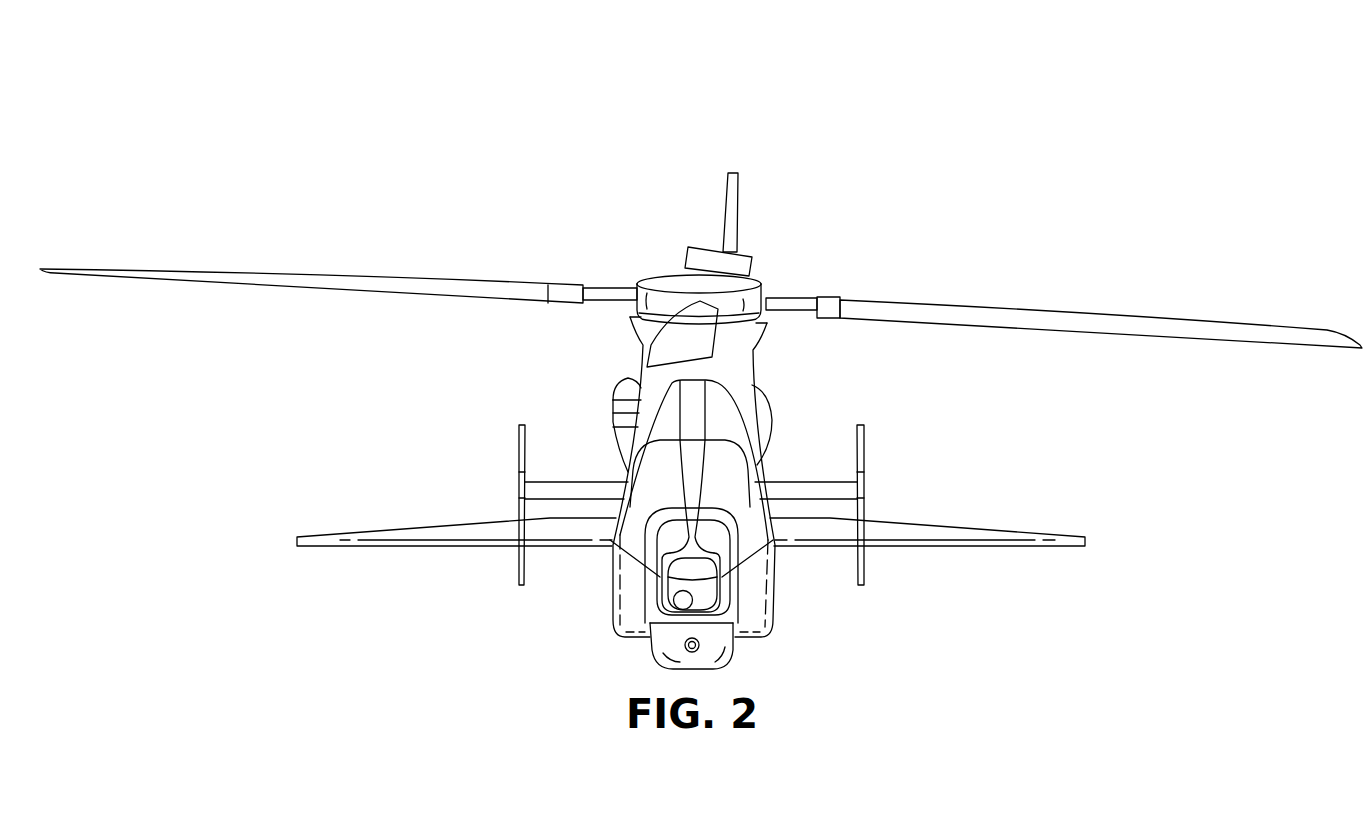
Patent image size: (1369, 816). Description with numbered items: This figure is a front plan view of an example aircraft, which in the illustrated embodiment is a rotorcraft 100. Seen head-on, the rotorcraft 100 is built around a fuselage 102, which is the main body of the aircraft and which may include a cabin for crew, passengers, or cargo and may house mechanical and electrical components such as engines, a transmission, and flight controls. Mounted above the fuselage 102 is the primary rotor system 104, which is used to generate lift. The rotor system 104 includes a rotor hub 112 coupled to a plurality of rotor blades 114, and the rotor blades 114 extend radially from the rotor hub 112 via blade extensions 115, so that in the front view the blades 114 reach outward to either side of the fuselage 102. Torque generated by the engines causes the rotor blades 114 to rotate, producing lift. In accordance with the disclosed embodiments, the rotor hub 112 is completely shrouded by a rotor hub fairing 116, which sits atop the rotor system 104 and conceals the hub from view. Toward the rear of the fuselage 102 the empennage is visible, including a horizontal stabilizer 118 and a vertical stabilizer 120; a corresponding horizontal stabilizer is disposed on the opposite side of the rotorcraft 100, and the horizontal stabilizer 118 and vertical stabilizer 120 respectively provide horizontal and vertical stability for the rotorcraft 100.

The rotorcraft 100 is at (318, 122).
The fuselage 102 is at (613, 400).
The primary rotor system 104 is at (771, 186).
The rotor hub 112 is at (774, 283).
The rotor blades 114 is at (330, 274).
The blade extensions 115 is at (610, 288).
The rotor hub fairing 116 is at (652, 277).
The horizontal stabilizer 118 is at (580, 482).
The vertical stabilizer 120 is at (726, 200).